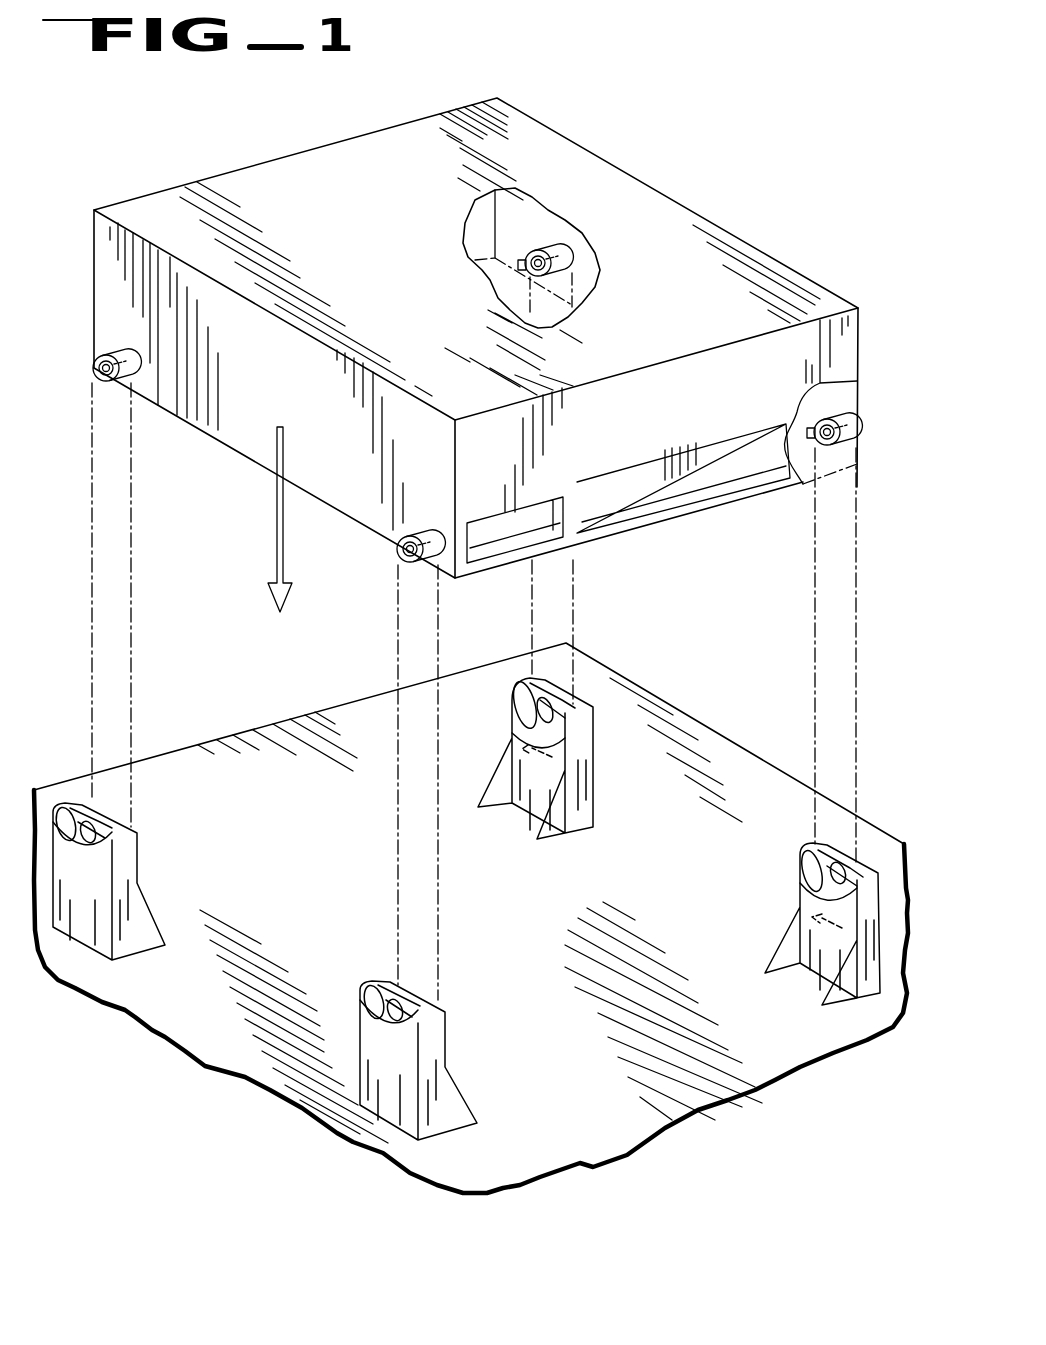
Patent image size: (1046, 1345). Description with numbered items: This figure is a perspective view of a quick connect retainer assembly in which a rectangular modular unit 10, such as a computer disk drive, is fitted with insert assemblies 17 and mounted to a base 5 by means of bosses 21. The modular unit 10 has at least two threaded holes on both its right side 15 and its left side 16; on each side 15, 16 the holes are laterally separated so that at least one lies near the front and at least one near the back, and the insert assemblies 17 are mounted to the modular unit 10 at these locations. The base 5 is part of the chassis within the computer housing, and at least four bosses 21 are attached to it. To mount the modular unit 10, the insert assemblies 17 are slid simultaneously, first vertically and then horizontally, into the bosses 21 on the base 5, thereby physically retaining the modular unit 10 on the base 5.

The modular unit 10 is at (725, 94).
The left side 16 is at (108, 269).
The right side 15 is at (551, 228).
The insert assemblies 17 is at (106, 353).
The base 5 is at (336, 856).
The bosses 21 is at (127, 866).